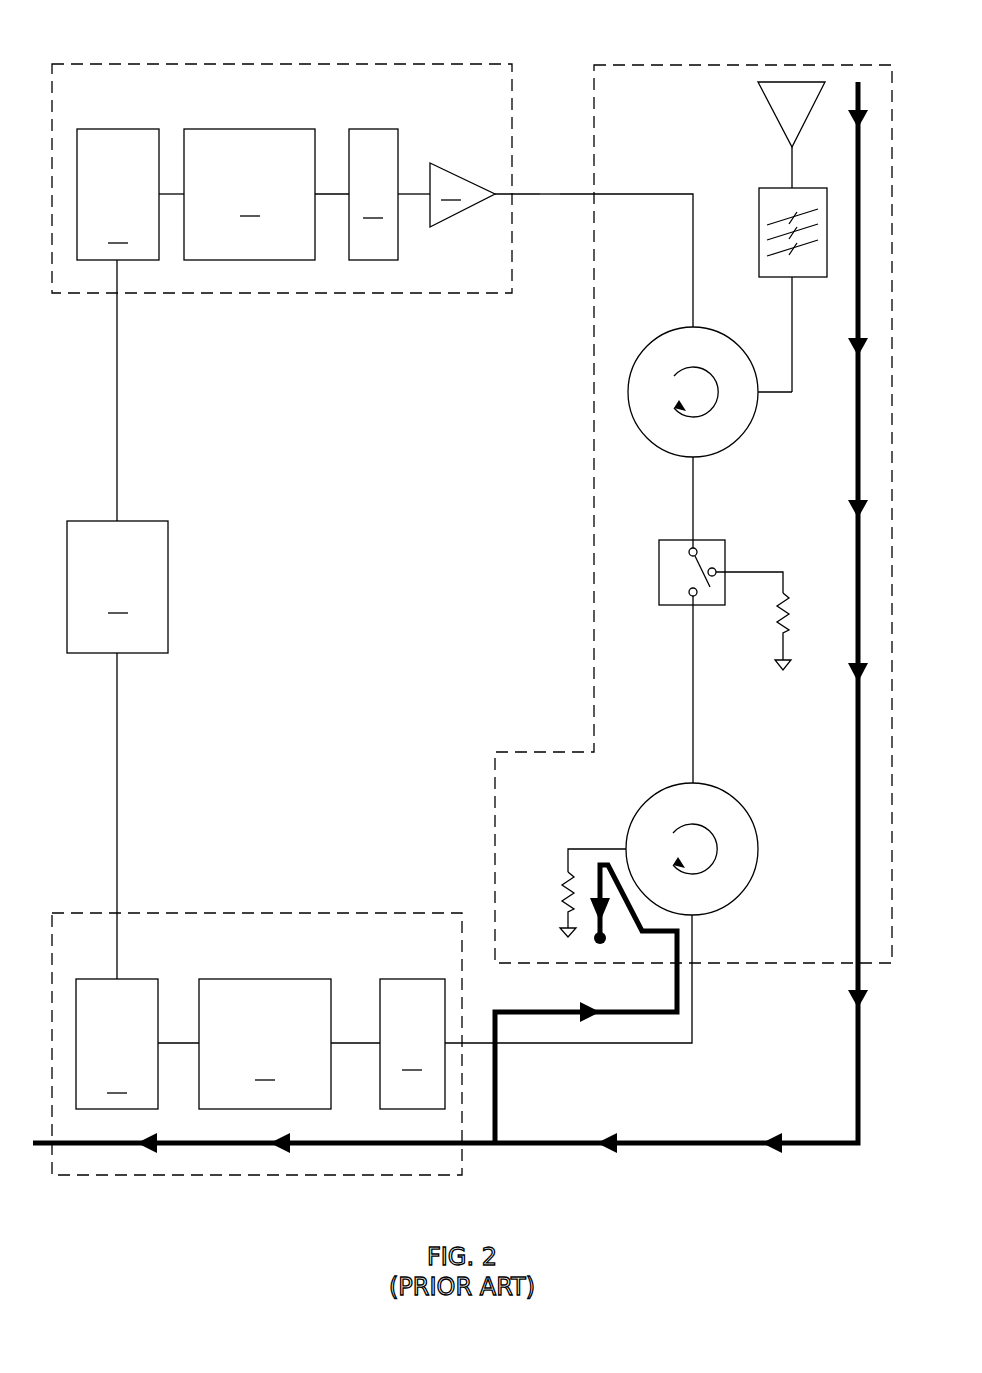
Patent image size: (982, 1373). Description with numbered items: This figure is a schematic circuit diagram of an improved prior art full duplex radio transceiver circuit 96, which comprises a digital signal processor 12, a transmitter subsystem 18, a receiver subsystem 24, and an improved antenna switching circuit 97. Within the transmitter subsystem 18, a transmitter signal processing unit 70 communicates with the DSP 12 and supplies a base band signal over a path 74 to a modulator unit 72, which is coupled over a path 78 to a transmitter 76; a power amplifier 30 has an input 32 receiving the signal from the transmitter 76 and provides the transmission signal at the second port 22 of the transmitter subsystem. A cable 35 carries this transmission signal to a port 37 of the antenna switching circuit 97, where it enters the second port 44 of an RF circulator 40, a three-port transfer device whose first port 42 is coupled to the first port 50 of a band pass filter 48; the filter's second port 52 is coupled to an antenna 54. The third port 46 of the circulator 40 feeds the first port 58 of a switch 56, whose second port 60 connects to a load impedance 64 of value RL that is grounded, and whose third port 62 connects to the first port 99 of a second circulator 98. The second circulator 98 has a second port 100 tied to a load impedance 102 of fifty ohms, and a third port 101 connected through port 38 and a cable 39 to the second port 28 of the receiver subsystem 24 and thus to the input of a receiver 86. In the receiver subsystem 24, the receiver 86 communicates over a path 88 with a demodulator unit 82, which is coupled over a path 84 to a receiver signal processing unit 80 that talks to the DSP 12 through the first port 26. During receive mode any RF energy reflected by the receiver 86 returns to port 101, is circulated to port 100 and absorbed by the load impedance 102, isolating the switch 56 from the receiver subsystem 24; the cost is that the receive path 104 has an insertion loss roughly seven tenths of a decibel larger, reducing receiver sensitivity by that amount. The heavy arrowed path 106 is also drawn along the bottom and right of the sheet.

The digital signal processor 12 is at (117, 619).
The transmitter subsystem 18 is at (283, 295).
The second port of transmitter subsystem 22 is at (512, 196).
The receiver subsystem 24 is at (257, 913).
The first port of receiver subsystem 26 is at (118, 912).
The second port of receiver subsystem 28 is at (462, 1042).
The power amplifier 30 is at (446, 195).
The input of power amplifier 32 is at (430, 203).
The cable 35 is at (548, 192).
The port of antenna switching circuit 37 is at (593, 192).
The port of antenna switching circuit 38 is at (694, 722).
The cable 39 is at (658, 1047).
The RF circulator 40 is at (772, 439).
The first port of RF circulator 42 is at (760, 395).
The second port of RF circulator 44 is at (693, 326).
The third port of RF circulator 46 is at (694, 460).
The band pass filter 48 is at (758, 235).
The first port of band pass filter 50 is at (792, 283).
The second port of band pass filter 52 is at (793, 186).
The antenna 54 is at (775, 117).
The switch 56 is at (652, 614).
The first port of switch 58 is at (692, 538).
The second port of switch 60 is at (726, 572).
The third port of switch 62 is at (694, 607).
The load impedance 64 is at (803, 587).
The transmitter signal processing unit 70 is at (118, 194).
The modulator unit 72 is at (249, 194).
The path 74 is at (175, 192).
The transmitter 76 is at (373, 194).
The path 78 is at (332, 192).
The receiver signal processing unit 80 is at (117, 1044).
The demodulator unit 82 is at (265, 1044).
The path 84 is at (183, 1043).
The receiver 86 is at (412, 1044).
The path 88 is at (363, 1043).
The improved prior art transceiver circuit 96 is at (863, 31).
The improved antenna switching circuit 97 is at (595, 457).
The second circulator 98 is at (761, 812).
The first port of second circulator 99 is at (690, 782).
The second port of second circulator 100 is at (627, 848).
The third port of second circulator 101 is at (694, 918).
The load impedance 102 is at (556, 868).
The receive path 104 is at (858, 1070).
The leakage signal path into receiver 106 is at (498, 1082).